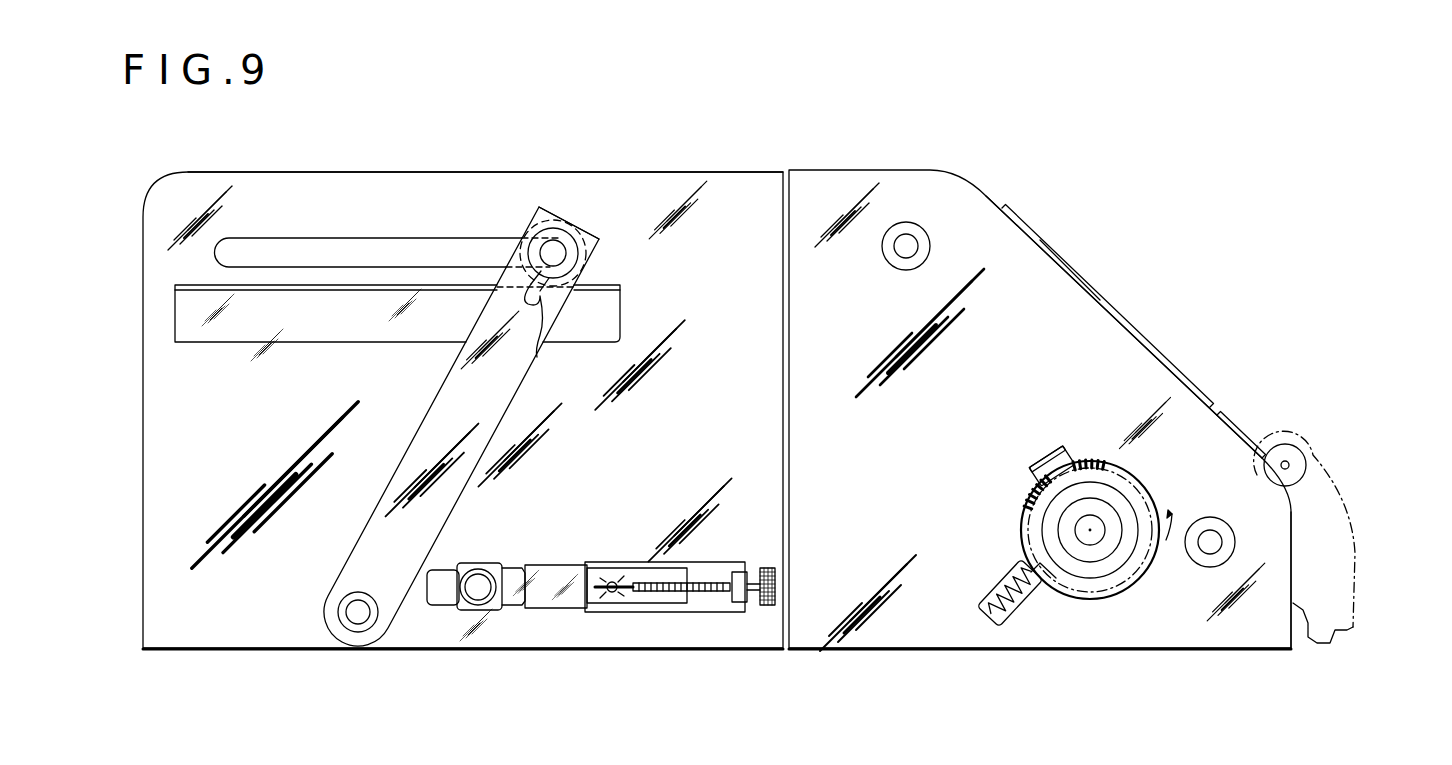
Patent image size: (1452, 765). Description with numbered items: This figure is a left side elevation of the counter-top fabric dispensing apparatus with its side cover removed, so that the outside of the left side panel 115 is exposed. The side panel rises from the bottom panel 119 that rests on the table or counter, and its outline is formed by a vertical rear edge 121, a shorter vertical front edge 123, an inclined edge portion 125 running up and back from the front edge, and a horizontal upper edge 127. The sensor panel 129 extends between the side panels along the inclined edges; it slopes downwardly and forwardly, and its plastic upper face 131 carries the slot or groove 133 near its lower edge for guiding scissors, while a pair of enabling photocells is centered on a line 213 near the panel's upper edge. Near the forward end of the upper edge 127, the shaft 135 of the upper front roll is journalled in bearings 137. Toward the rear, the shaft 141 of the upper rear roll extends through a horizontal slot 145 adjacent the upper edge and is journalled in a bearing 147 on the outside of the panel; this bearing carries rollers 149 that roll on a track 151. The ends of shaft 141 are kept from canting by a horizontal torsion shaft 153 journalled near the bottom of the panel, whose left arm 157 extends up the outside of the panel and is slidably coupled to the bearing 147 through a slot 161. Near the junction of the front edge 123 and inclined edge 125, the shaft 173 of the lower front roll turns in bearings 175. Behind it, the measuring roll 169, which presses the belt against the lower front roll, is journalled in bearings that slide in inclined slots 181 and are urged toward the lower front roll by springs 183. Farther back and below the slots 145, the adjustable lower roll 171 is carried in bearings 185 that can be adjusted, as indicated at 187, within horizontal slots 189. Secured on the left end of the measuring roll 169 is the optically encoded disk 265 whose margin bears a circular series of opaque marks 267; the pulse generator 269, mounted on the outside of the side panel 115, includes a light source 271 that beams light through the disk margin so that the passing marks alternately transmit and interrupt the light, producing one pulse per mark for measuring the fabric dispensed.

The left side panel 115 is at (908, 597).
The bottom panel 119 is at (282, 655).
The vertical rear edge 121 is at (143, 500).
The vertical front edge 123 is at (1293, 602).
The inclined edge portion 125 is at (1128, 348).
The horizontal upper edge 127 is at (357, 172).
The sensor panel 129 is at (1033, 238).
The plastic upper face 131 is at (1067, 265).
The slot or groove 133 is at (1217, 408).
The shaft 135 is at (902, 258).
The bearings 137 is at (932, 238).
The shaft 141 is at (557, 252).
The horizontal slots 145 is at (358, 240).
The bearings 147 is at (567, 265).
The rollers 149 is at (560, 220).
The tracks 151 is at (335, 293).
The torsion shaft 153 is at (345, 613).
The arm 157 is at (385, 485).
The slot 161 is at (537, 357).
The measuring roll 169 is at (1104, 528).
The adjustable lower roll 171 is at (482, 597).
The shaft 173 is at (1232, 530).
The bearings 175 is at (1210, 553).
The inclined slots 181 is at (1035, 612).
The springs 183 is at (1007, 580).
The bearings 185 is at (490, 565).
The adjustment means 187 is at (707, 592).
The horizontal slots 189 is at (438, 593).
The line 213 is at (1037, 480).
The optically encoded disk 265 is at (1119, 593).
The opaque marks 267 is at (1113, 463).
The pulse generator 269 is at (1042, 440).
The light source 271 is at (1120, 477).